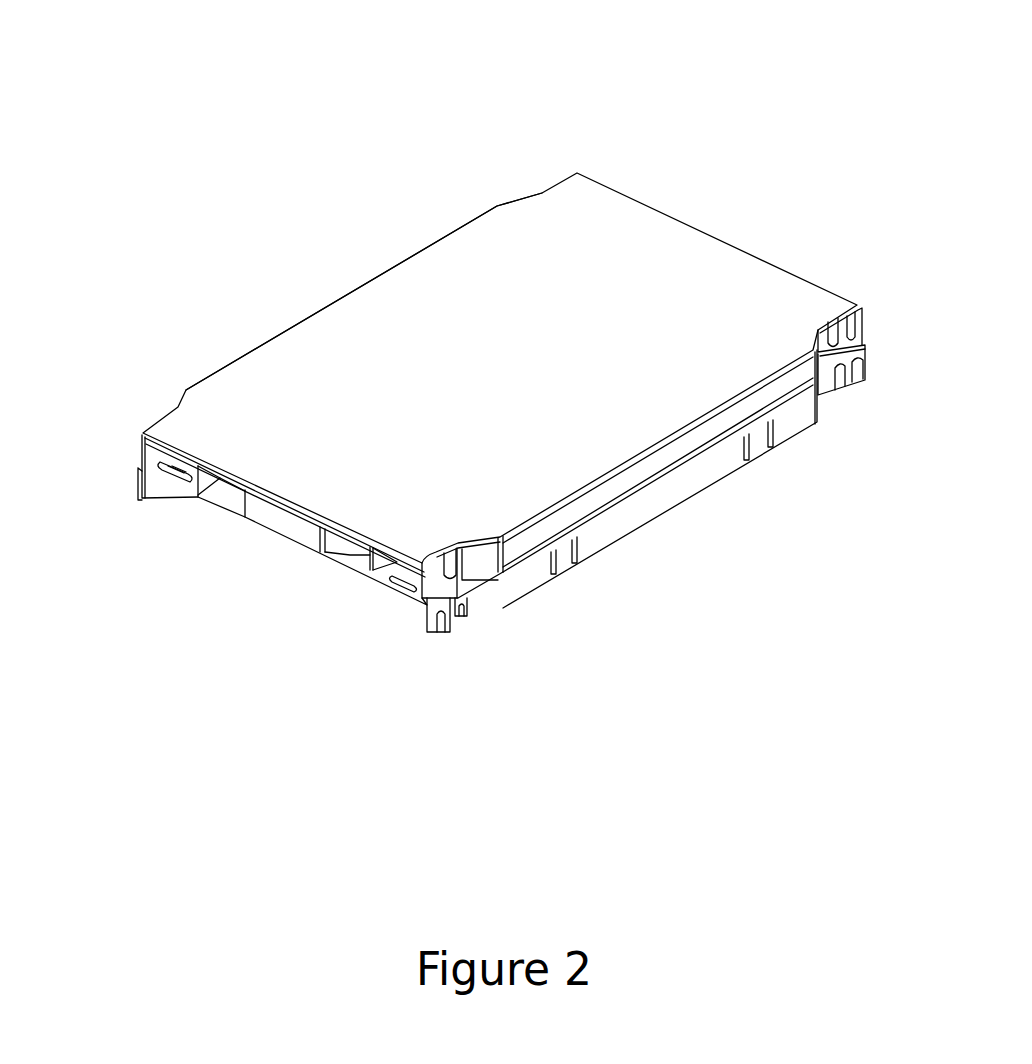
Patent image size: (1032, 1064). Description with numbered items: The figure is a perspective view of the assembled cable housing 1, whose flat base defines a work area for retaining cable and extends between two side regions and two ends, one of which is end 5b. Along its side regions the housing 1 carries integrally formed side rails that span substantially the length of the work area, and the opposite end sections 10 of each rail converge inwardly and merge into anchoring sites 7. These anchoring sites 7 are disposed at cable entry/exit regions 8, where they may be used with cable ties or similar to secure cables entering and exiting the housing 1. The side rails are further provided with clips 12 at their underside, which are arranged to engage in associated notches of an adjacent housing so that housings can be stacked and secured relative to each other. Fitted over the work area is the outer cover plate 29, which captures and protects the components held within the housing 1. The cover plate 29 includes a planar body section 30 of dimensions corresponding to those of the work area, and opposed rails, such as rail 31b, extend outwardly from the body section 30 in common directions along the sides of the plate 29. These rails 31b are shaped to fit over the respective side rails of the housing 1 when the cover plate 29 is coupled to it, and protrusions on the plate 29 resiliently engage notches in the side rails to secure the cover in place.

The cable housing 1 is at (471, 410).
The end 5b is at (280, 518).
The anchoring site 7 is at (142, 458).
The cable entry/exit region 8 is at (168, 483).
The end section 10 is at (475, 567).
The clip 12 is at (565, 565).
The outer cover plate 29 is at (427, 318).
The planar body section 30 is at (497, 243).
The rail 31b is at (648, 470).